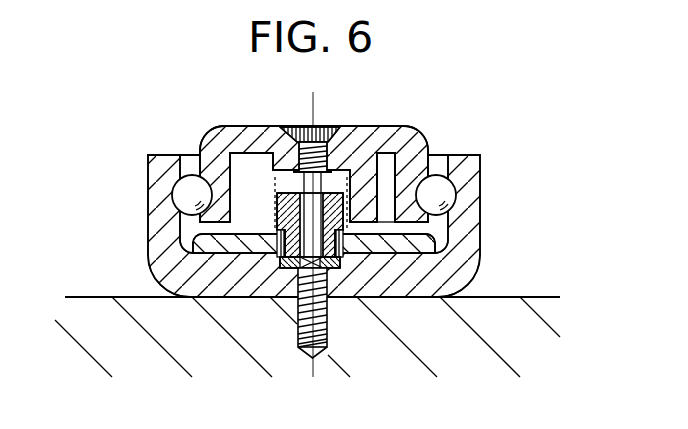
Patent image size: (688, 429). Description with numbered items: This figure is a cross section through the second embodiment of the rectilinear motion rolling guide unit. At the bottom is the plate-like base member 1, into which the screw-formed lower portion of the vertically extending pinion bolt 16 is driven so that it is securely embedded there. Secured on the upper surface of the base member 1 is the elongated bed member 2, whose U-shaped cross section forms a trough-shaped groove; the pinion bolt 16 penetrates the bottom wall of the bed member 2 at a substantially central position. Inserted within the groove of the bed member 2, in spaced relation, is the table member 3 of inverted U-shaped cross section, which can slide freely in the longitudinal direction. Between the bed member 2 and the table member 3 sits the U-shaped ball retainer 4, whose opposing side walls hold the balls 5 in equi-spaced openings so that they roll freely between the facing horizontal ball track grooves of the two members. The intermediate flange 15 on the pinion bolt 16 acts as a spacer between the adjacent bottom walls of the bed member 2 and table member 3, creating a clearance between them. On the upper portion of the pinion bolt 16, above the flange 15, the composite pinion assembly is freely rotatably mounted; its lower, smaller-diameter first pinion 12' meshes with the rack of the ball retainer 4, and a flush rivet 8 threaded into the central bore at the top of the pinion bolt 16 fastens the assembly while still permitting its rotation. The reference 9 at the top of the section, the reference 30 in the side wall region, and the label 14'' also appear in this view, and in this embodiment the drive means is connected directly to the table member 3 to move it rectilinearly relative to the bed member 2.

The base member 1 is at (533, 349).
The bed member 2 is at (473, 212).
The table member 3 is at (395, 130).
The ball retainer 4 is at (440, 158).
The balls 5 is at (442, 206).
The flush rivet 8 is at (317, 197).
The screw 9 is at (325, 128).
The first pinion 12' is at (314, 291).
The cavity 14'' is at (290, 196).
The intermediate flange 15 is at (280, 266).
The pinion bolt 16 is at (327, 317).
The slot 30 is at (393, 188).